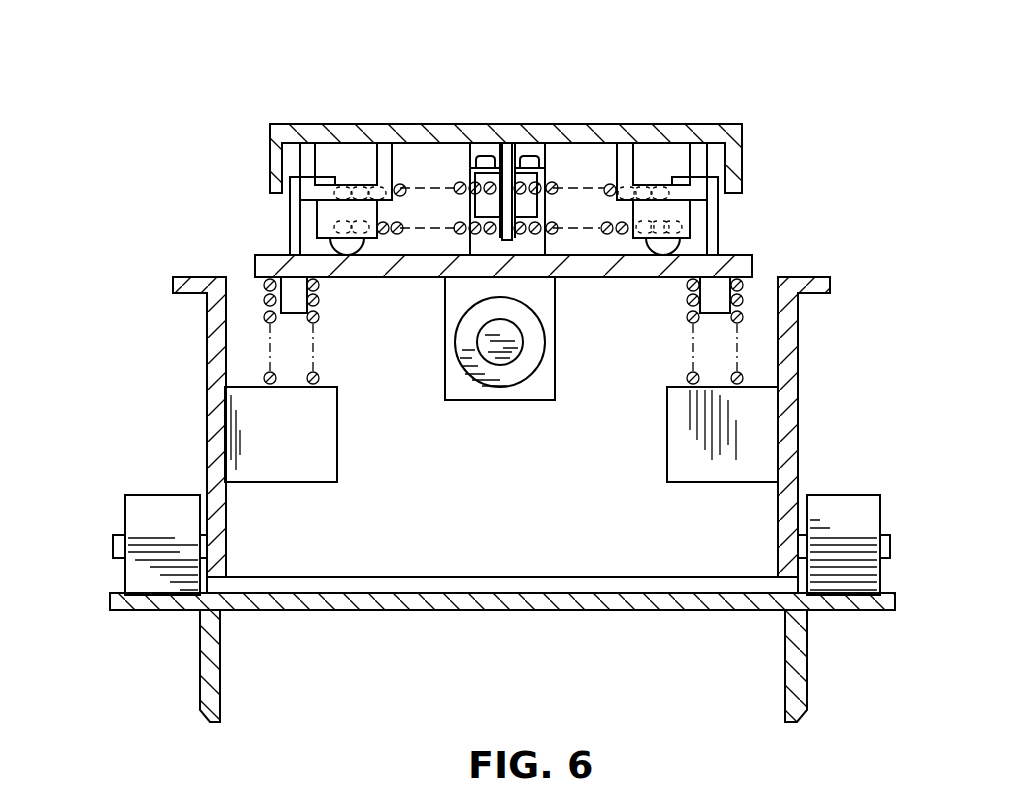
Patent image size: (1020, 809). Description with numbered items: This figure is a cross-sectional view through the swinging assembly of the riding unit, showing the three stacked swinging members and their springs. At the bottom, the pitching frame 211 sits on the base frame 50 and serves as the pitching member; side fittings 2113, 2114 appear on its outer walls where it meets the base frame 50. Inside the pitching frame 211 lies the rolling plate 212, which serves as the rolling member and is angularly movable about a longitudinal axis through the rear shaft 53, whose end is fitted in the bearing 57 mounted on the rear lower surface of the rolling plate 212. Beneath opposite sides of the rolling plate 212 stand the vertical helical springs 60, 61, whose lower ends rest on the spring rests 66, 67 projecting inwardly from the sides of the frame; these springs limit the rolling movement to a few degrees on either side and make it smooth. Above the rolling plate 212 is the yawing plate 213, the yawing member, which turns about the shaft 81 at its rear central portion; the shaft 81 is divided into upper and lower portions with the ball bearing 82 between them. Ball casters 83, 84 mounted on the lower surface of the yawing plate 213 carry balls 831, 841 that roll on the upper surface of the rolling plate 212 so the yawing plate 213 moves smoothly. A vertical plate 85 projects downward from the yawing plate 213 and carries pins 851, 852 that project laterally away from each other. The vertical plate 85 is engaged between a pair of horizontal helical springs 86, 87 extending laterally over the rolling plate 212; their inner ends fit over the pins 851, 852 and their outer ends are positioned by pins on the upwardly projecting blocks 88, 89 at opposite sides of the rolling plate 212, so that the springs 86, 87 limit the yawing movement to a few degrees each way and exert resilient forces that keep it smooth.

The base frame 50 is at (841, 611).
The shaft 53 is at (496, 354).
The bearing 57 is at (522, 368).
The helical spring 60 is at (265, 350).
The helical spring 61 is at (745, 342).
The spring rest 66 is at (298, 468).
The spring rest 67 is at (692, 472).
The shaft 81 is at (470, 248).
The ball bearing 82 is at (545, 162).
The ball caster 83 is at (323, 216).
The ball caster 84 is at (695, 217).
The vertical plate 85 is at (506, 140).
The helical spring 86 is at (408, 167).
The helical spring 87 is at (606, 238).
The upwardly projecting block 88 is at (290, 233).
The upwardly projecting block 89 is at (706, 234).
The pitching frame 211 is at (799, 407).
The rolling plate 212 is at (753, 274).
The yawing plate 213 is at (597, 128).
The ball 831 is at (348, 252).
The ball 841 is at (658, 252).
The pin 851 is at (493, 213).
The pin 852 is at (527, 213).
The left adjusting screw 2113 is at (141, 504).
The right adjusting screw 2114 is at (840, 503).